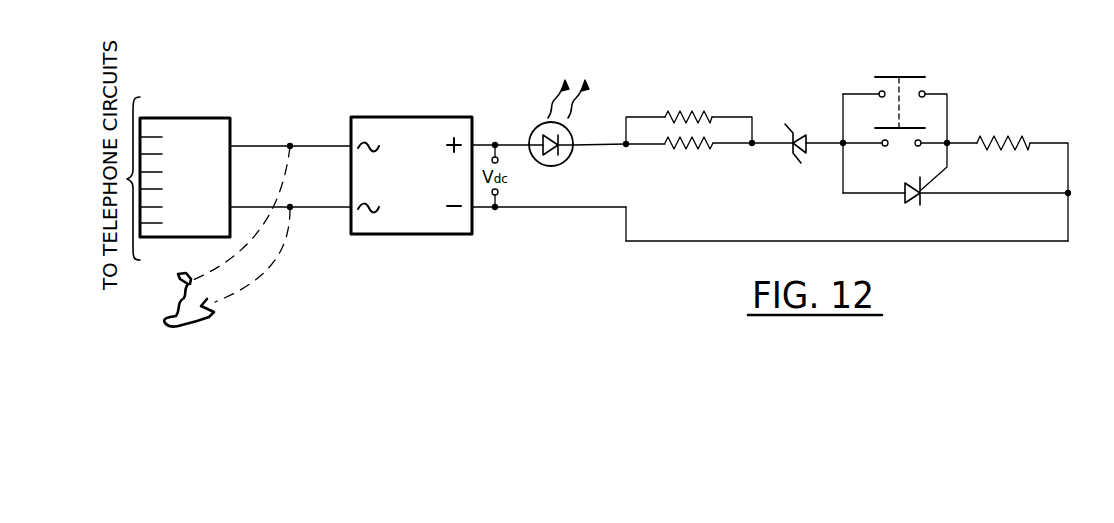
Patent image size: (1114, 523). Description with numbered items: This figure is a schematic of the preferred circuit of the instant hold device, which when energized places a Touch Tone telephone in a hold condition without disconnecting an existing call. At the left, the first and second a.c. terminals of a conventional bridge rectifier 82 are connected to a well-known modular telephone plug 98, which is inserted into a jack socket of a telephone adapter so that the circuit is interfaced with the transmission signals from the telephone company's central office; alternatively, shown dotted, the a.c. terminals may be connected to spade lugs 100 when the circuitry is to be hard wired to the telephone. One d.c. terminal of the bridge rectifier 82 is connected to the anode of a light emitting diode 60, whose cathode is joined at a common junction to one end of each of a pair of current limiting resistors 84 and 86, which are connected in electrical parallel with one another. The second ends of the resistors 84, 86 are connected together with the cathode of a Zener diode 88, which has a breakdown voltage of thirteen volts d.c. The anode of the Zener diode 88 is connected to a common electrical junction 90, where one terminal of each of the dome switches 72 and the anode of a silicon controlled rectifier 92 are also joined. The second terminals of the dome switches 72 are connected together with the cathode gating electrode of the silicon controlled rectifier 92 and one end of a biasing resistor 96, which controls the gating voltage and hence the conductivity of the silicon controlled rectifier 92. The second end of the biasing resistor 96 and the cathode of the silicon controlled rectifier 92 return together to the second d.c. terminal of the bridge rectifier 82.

The modular telephone plug 98 is at (230, 130).
The spade lugs 100 is at (168, 325).
The bridge rectifier 82 is at (392, 124).
The light emitting diode 60 is at (563, 160).
The current limiting resistor 84 is at (703, 108).
The current limiting resistor 86 is at (675, 148).
The Zener diode 88 is at (790, 122).
The common electrical junction 90 is at (843, 143).
The dome switches 72 is at (899, 77).
The silicon controlled rectifier 92 is at (908, 204).
The biasing resistor 96 is at (1030, 138).